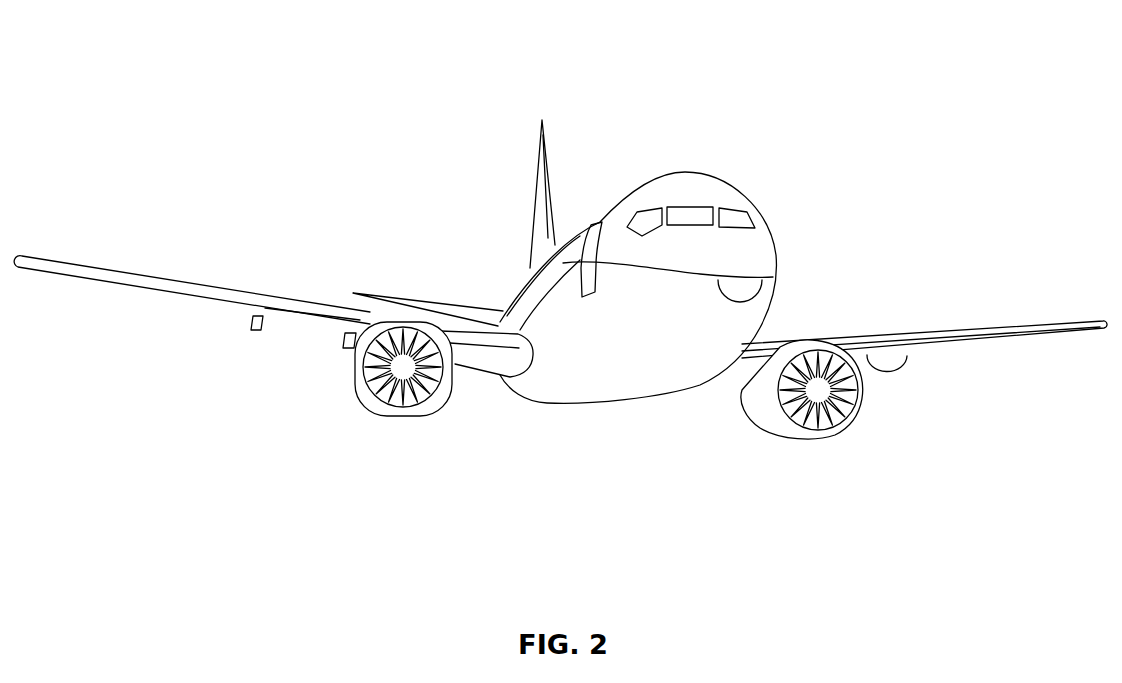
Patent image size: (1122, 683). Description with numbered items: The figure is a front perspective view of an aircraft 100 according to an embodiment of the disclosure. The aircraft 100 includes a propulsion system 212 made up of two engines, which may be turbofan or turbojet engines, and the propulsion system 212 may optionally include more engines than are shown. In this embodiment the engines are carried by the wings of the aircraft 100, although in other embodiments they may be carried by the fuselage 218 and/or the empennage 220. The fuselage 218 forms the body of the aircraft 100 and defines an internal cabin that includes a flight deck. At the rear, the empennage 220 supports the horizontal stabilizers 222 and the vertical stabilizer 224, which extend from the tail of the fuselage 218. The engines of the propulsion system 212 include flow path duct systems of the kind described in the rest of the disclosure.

The aircraft 100 is at (289, 62).
The propulsion system 212 is at (915, 431).
The fuselage 218 is at (776, 238).
The empennage 220 is at (528, 273).
The horizontal stabilizer 222 is at (390, 295).
The vertical stabilizer 224 is at (533, 163).